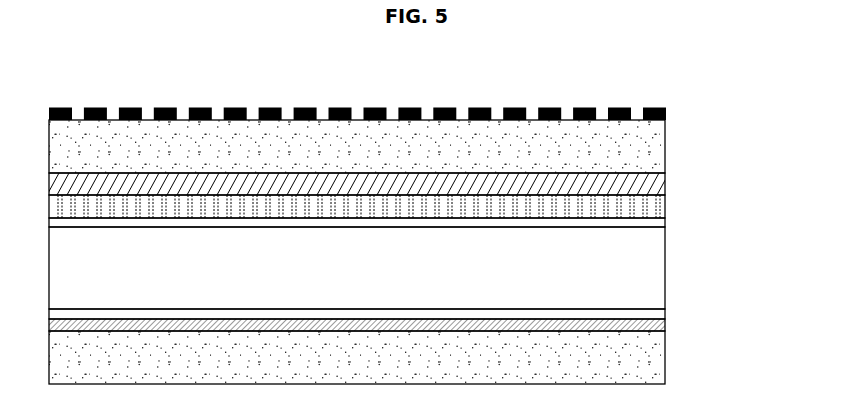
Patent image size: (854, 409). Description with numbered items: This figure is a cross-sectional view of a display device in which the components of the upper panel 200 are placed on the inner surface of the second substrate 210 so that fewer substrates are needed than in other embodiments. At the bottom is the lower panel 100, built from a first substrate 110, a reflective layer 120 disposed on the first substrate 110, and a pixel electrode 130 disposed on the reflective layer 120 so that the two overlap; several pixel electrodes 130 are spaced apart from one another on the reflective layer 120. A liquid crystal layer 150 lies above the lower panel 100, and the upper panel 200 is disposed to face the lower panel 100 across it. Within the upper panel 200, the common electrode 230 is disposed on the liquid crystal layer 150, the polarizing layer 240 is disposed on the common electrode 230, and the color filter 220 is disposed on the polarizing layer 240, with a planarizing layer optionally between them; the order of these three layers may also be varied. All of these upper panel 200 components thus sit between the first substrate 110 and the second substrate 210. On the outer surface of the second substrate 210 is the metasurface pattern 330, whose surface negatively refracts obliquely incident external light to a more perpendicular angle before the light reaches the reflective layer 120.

The metasurface pattern 330 is at (655, 108).
The second substrate 210 is at (655, 148).
The color filter 220 is at (667, 183).
The polarizing layer 240 is at (667, 206).
The common electrode 230 is at (667, 222).
The upper panel 200 is at (735, 147).
The liquid crystal layer 150 is at (660, 272).
The pixel electrode 130 is at (667, 313).
The reflective layer 120 is at (667, 323).
The first substrate 110 is at (665, 360).
The lower panel 100 is at (735, 308).